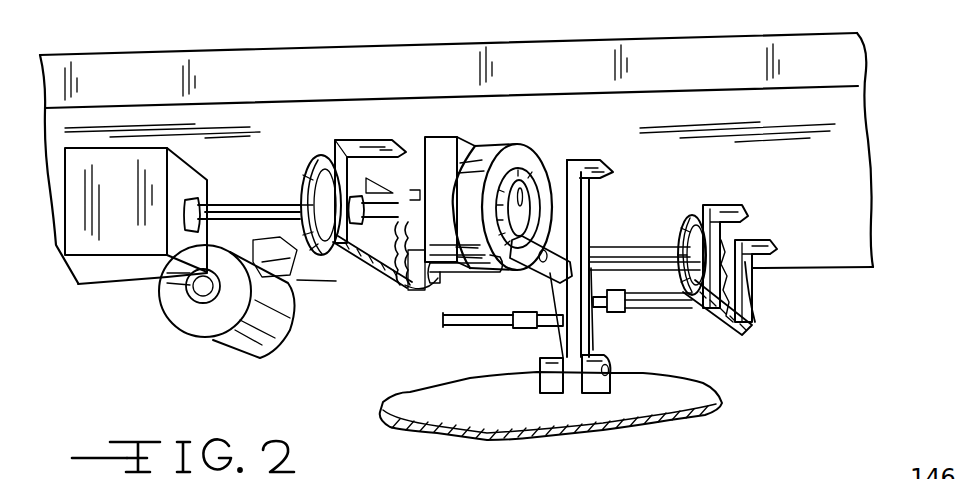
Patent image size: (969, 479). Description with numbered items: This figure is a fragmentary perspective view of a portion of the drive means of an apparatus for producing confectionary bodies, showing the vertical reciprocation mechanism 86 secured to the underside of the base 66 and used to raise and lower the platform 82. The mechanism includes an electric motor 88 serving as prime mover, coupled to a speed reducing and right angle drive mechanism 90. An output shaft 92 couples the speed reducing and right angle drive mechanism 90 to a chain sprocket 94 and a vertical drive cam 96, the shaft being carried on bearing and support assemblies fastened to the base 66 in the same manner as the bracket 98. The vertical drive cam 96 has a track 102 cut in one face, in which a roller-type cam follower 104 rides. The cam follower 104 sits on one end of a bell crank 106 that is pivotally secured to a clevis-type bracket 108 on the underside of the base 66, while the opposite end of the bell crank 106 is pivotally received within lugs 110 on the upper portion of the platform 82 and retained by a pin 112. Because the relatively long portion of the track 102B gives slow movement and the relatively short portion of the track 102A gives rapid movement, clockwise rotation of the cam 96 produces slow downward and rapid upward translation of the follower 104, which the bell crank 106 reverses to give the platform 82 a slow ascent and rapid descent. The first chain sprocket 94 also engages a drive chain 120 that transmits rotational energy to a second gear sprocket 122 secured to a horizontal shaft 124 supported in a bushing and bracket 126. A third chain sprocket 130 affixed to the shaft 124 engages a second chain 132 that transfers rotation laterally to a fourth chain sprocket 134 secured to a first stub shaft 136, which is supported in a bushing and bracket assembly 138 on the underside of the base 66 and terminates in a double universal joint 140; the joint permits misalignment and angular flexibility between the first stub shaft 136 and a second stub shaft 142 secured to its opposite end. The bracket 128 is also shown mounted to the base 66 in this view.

The base 66 is at (533, 67).
The platform 82 is at (525, 415).
The vertical reciprocation mechanism 86 is at (340, 376).
The electric motor 88 is at (284, 325).
The speed reducing and right angle drive mechanism 90 is at (118, 262).
The output shaft 92 is at (248, 205).
The chain sprocket 94 is at (337, 262).
The vertical drive cam 96 is at (562, 207).
The bracket 98 is at (352, 170).
The track 102 is at (488, 263).
The short portion of the track 102A is at (533, 200).
The long portion of the track 102B is at (492, 193).
The cam follower 104 is at (520, 263).
The bell crank 106 is at (575, 232).
The clevis-type bracket 108 is at (608, 165).
The lugs 110 is at (610, 372).
The pin 112 is at (615, 378).
The drive chain 120 is at (408, 293).
The second gear sprocket 122 is at (403, 290).
The horizontal shaft 124 is at (613, 243).
The bushing and bracket 126 is at (408, 197).
The bracket 128 is at (712, 202).
The third chain sprocket 130 is at (702, 296).
The second chain 132 is at (708, 300).
The fourth chain sprocket 134 is at (755, 322).
The first stub shaft 136 is at (673, 298).
The bushing and bracket assembly 138 is at (772, 238).
The double universal joint 140 is at (603, 308).
The second stub shaft 142 is at (455, 328).